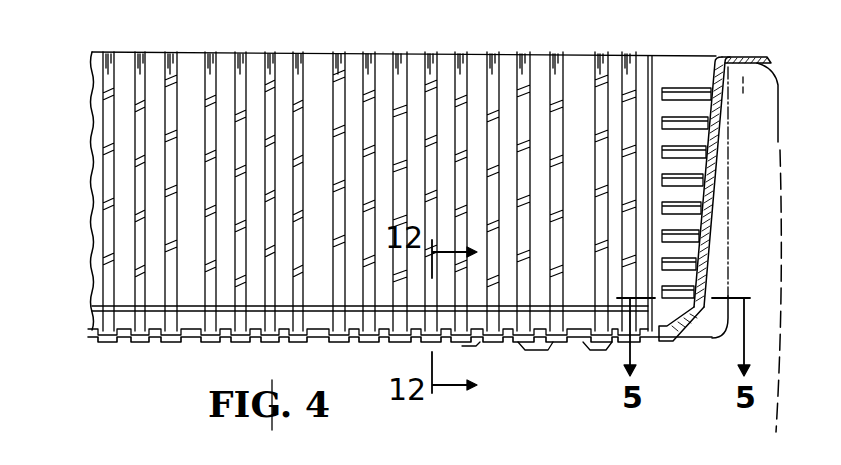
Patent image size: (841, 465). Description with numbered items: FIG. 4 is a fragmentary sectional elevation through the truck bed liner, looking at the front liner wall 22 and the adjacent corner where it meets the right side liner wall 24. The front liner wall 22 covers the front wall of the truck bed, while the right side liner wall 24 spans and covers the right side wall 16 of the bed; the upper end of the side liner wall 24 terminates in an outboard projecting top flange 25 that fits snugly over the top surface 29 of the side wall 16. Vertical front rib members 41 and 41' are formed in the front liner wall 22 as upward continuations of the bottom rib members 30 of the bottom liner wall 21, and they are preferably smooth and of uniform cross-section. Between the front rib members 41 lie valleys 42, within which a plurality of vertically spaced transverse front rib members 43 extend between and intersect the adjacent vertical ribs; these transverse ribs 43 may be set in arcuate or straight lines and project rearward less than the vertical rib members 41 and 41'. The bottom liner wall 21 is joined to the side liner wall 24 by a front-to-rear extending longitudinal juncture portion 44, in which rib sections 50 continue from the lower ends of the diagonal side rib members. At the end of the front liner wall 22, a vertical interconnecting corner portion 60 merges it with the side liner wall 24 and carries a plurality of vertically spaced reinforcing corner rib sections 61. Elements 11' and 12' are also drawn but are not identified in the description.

The bottom projection 11' is at (507, 363).
The bottom projection 12' is at (582, 364).
The right side wall 16 is at (783, 137).
The bottom liner wall 21 is at (168, 340).
The front liner wall 22 is at (421, 57).
The right side liner wall 24 is at (717, 210).
The top flange 25 is at (743, 58).
The top surface 29 is at (745, 181).
The rib member 30 is at (385, 332).
The front rib member 41 is at (374, 173).
The front vertical rib member 41' is at (593, 173).
The valley 42 is at (120, 173).
The transverse front rib member 43 is at (328, 103).
The longitudinal juncture portion 44 is at (712, 340).
The rib section 50 is at (695, 347).
The interconnecting corner portion 60 is at (707, 72).
The corner rib section 61 is at (682, 125).